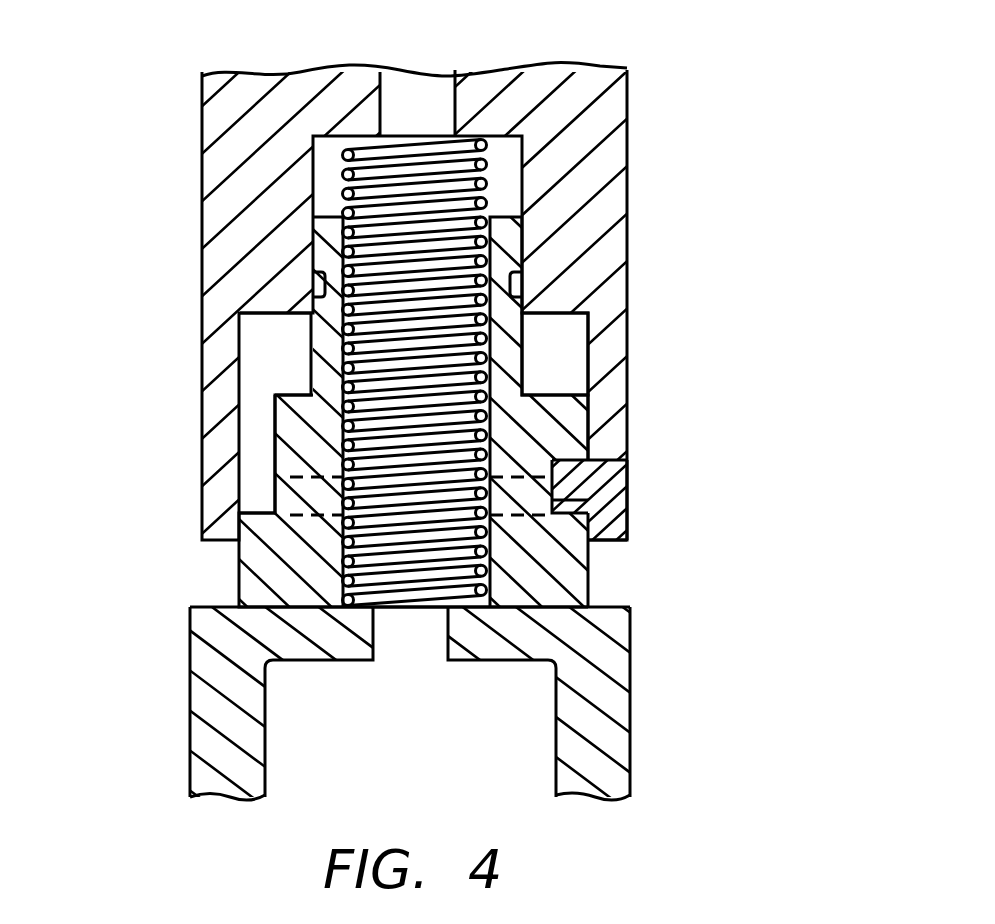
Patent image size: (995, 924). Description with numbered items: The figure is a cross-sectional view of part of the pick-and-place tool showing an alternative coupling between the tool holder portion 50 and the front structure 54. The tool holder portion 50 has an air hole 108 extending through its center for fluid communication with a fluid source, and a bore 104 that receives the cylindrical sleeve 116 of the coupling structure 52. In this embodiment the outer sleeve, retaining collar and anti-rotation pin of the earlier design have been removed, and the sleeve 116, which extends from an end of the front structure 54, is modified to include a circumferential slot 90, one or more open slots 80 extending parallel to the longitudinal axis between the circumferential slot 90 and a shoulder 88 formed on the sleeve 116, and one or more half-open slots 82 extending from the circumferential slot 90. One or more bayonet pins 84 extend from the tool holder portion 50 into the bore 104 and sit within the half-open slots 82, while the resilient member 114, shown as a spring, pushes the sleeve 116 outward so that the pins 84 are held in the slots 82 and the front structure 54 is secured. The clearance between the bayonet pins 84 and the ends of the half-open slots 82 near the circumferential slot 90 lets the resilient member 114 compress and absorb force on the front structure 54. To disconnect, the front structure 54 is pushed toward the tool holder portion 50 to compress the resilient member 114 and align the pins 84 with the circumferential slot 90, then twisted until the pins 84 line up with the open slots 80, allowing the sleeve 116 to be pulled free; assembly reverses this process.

The tool holder portion 50 is at (663, 187).
The coupling structure 52 is at (784, 514).
The front structure 54 is at (646, 674).
The open slots 80 is at (250, 422).
The half-open slots 82 is at (580, 506).
The bayonet pins 84 is at (605, 452).
The shoulder 88 is at (287, 393).
The circumferential slot 90 is at (287, 496).
The bore 104 is at (505, 248).
The air hole 108 is at (432, 102).
The resilient member 114 is at (345, 574).
The cylindrical sleeve 116 is at (512, 352).